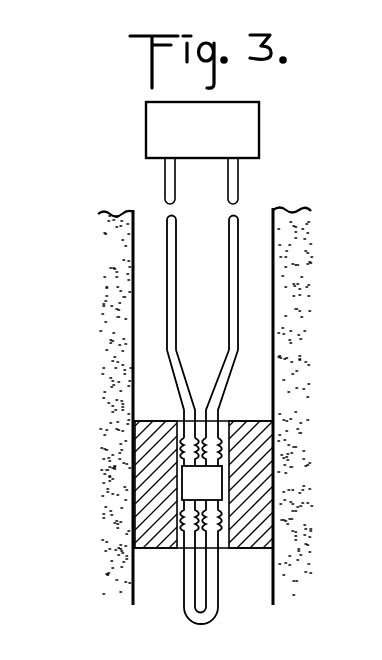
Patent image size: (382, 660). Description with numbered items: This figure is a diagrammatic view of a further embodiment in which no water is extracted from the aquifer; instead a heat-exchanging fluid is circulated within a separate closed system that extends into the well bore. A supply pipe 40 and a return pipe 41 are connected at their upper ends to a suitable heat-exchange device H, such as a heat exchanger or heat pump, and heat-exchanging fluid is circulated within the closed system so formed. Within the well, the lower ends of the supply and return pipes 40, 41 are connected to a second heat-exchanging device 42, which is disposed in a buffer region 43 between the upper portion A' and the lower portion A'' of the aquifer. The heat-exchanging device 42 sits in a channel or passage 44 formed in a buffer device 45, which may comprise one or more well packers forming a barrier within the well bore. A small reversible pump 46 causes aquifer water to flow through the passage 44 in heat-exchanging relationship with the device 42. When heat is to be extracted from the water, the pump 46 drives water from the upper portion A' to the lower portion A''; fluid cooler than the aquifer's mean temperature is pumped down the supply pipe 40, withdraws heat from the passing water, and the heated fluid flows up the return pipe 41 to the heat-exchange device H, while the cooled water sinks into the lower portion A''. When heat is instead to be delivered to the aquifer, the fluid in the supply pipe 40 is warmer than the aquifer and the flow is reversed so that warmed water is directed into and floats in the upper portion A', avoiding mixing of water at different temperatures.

The heat-exchange device H is at (262, 148).
The upper portion of the aquifer A' is at (104, 407).
The lower portion of the aquifer A'' is at (197, 410).
The supply pipe 40 is at (167, 309).
The return pipe 41 is at (238, 312).
The heat-exchanging device 42 is at (224, 519).
The buffer region 43 is at (121, 415).
The channel or passage 44 is at (180, 549).
The buffer device 45 is at (262, 470).
The reversible pump 46 is at (214, 488).